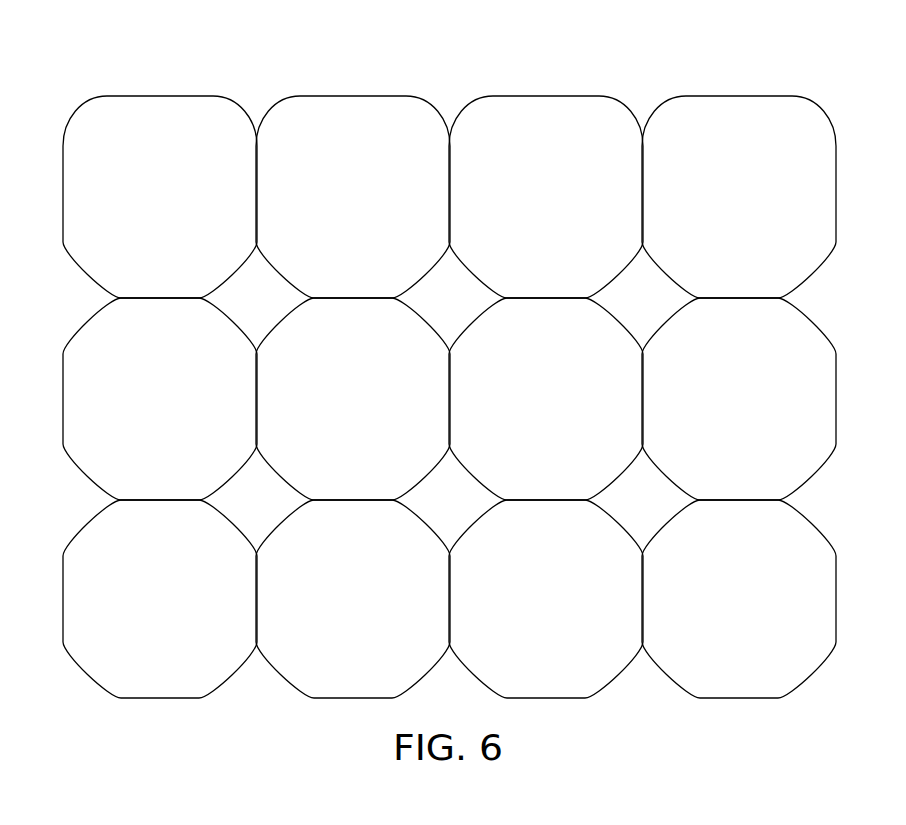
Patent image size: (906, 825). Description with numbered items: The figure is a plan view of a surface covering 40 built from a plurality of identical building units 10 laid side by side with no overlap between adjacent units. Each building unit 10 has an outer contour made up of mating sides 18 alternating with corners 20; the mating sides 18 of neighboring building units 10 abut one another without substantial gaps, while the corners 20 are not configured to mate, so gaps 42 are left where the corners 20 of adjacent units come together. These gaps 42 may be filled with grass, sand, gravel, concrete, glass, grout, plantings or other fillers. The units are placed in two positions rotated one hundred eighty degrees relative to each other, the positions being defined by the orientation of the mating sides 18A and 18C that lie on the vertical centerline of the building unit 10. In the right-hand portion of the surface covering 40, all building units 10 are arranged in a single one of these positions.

The surface covering 40 is at (43, 92).
The building unit 10 is at (170, 203).
The mating sides 18 is at (257, 207).
The mating side 18A is at (158, 96).
The mating side 18C is at (143, 298).
The corners 20 is at (214, 285).
The gaps 42 is at (264, 311).